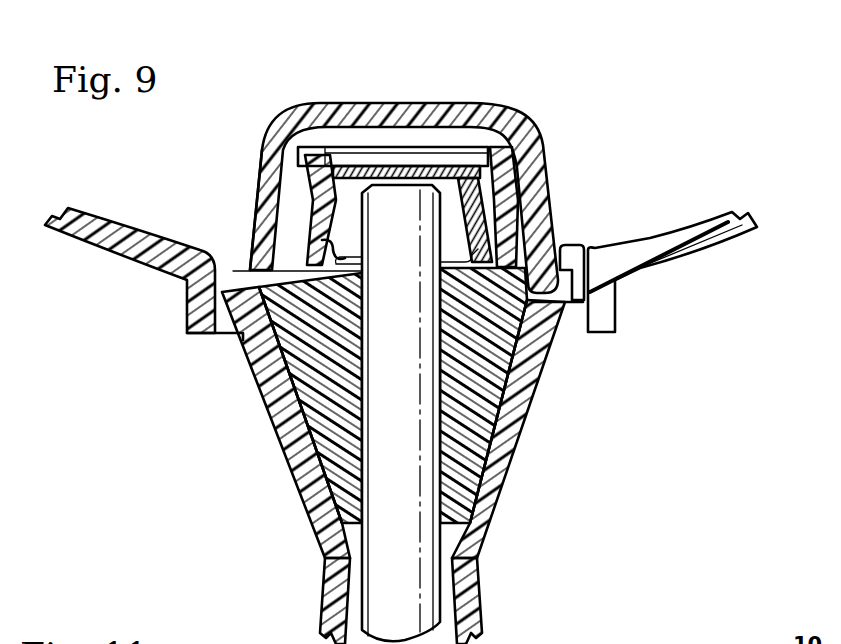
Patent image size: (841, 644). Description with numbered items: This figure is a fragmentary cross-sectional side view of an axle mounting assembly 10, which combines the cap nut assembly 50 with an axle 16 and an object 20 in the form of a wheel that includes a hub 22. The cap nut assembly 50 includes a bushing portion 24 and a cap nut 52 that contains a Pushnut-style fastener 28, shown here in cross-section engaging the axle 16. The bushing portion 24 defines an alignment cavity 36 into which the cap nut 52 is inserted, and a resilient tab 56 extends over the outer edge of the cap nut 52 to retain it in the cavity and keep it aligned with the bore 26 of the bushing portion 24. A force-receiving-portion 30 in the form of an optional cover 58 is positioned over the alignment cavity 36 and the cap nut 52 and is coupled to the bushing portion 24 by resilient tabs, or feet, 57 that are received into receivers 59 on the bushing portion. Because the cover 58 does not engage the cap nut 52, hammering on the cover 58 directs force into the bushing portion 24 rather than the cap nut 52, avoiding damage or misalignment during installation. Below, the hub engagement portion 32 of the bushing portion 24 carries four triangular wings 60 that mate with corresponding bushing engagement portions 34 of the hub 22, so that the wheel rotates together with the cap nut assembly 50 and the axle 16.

The axle mounting assembly 10 is at (750, 95).
The axle 16 is at (415, 565).
The object 20 is at (114, 221).
The hub 22 is at (304, 414).
The bushing portion 24 is at (308, 488).
The bore 26 is at (436, 456).
The Pushnut-style fastener 28 is at (344, 255).
The force-receiving-portion 30 is at (347, 104).
The hub engagement portion 32 is at (520, 402).
The bushing engagement portions 34 is at (288, 346).
The alignment cavity 36 is at (484, 168).
The cap nut assembly 50 is at (541, 122).
The cap nut 52 is at (470, 206).
The resilient tab 56 is at (320, 178).
The resilient tabs 57 is at (556, 286).
The cover 58 is at (260, 147).
The receivers 59 is at (561, 249).
The wings 60 is at (318, 428).